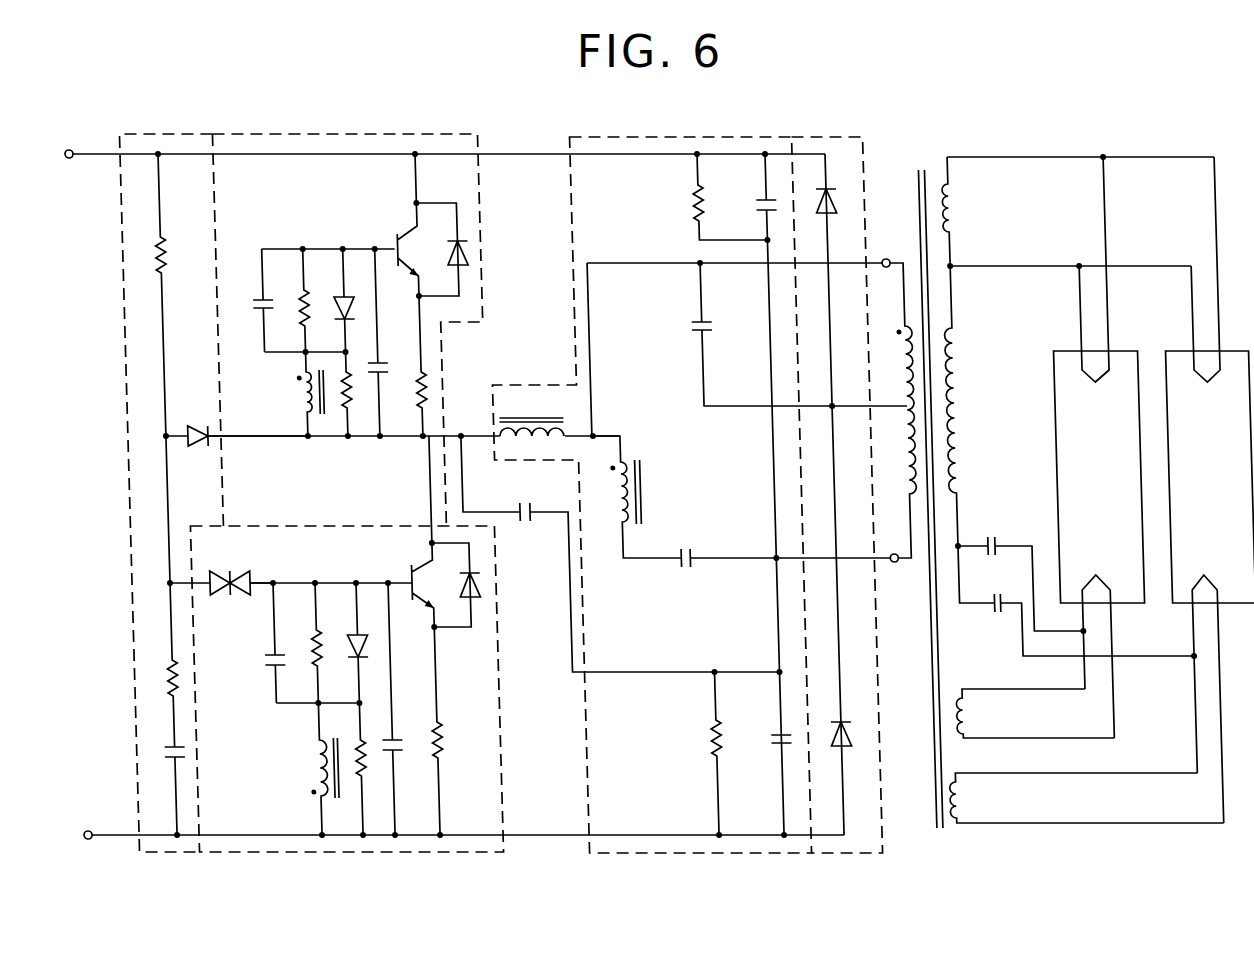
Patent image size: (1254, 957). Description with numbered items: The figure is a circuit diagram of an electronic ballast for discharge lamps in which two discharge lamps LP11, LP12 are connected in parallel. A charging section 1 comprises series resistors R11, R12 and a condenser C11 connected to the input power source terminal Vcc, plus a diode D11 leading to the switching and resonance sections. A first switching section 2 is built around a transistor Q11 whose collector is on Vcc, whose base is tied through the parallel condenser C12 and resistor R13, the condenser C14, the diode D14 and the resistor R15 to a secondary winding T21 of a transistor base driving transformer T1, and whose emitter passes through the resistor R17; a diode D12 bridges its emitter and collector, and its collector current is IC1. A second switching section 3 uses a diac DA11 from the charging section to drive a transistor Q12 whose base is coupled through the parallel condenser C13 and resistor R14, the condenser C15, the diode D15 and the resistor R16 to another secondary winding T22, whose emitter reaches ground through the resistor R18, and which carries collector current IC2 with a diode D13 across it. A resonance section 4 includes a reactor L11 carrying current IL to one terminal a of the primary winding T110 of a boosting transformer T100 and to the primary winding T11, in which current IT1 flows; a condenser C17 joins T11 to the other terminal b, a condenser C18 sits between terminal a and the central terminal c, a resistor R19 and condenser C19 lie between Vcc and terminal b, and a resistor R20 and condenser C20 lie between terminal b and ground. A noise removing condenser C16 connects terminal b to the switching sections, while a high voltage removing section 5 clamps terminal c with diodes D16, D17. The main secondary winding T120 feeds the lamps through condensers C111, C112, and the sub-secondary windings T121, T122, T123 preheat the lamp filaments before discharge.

The charging section 1 is at (174, 134).
The first switching section 2 is at (328, 134).
The second switching section 3 is at (481, 735).
The resonance section 4 is at (668, 137).
The high voltage removing section 5 is at (828, 137).
The input power source terminal Vcc is at (93, 156).
The resistor R11 is at (182, 295).
The resistor R12 is at (155, 591).
The condenser C11 is at (163, 788).
The diode D11 is at (236, 426).
The diac DA11 is at (221, 574).
The condenser C12 is at (276, 300).
The resistor R13 is at (319, 300).
The diode D14 is at (357, 300).
The secondary winding T21 is at (292, 394).
The resistor R15 is at (359, 394).
The condenser C14 is at (393, 342).
The resistor R17 is at (406, 366).
The transistor Q11 is at (397, 225).
The diode D12 is at (442, 249).
The collector current IC1 is at (423, 165).
The current through reactor IL is at (470, 425).
The collector current IC2 is at (426, 468).
The transistor Q12 is at (407, 531).
The diode D13 is at (454, 585).
The resistor R18 is at (459, 731).
The condenser C13 is at (259, 643).
The resistor R14 is at (301, 643).
The diode D15 is at (343, 643).
The secondary winding T22 is at (306, 769).
The resistor R16 is at (377, 769).
The condenser C15 is at (406, 709).
The noise removing condenser C16 is at (620, 554).
The reactor L11 is at (531, 414).
The transistor base driving transformer T1 is at (633, 497).
The primary winding T11 is at (633, 497).
The current through primary winding IT1 is at (596, 528).
The condenser C17 is at (782, 549).
The resistor R19 is at (707, 197).
The condenser C19 is at (753, 494).
The one terminal a is at (739, 276).
The other terminal b is at (888, 547).
The central terminal c is at (898, 421).
The condenser C18 is at (798, 334).
The diode D16 is at (838, 211).
The diode D17 is at (832, 723).
The resistor R20 is at (693, 753).
The condenser C20 is at (763, 743).
The boosting transformer T100 is at (932, 485).
The primary winding T110 is at (891, 410).
The main secondary winding T120 is at (981, 406).
The sub-secondary winding T121 is at (980, 211).
The sub-secondary winding T122 is at (1035, 713).
The sub-secondary winding T123 is at (1086, 798).
The condenser C111 is at (1020, 573).
The condenser C112 is at (1076, 601).
The discharge lamp LP11 is at (1098, 447).
The discharge lamp LP12 is at (1207, 490).